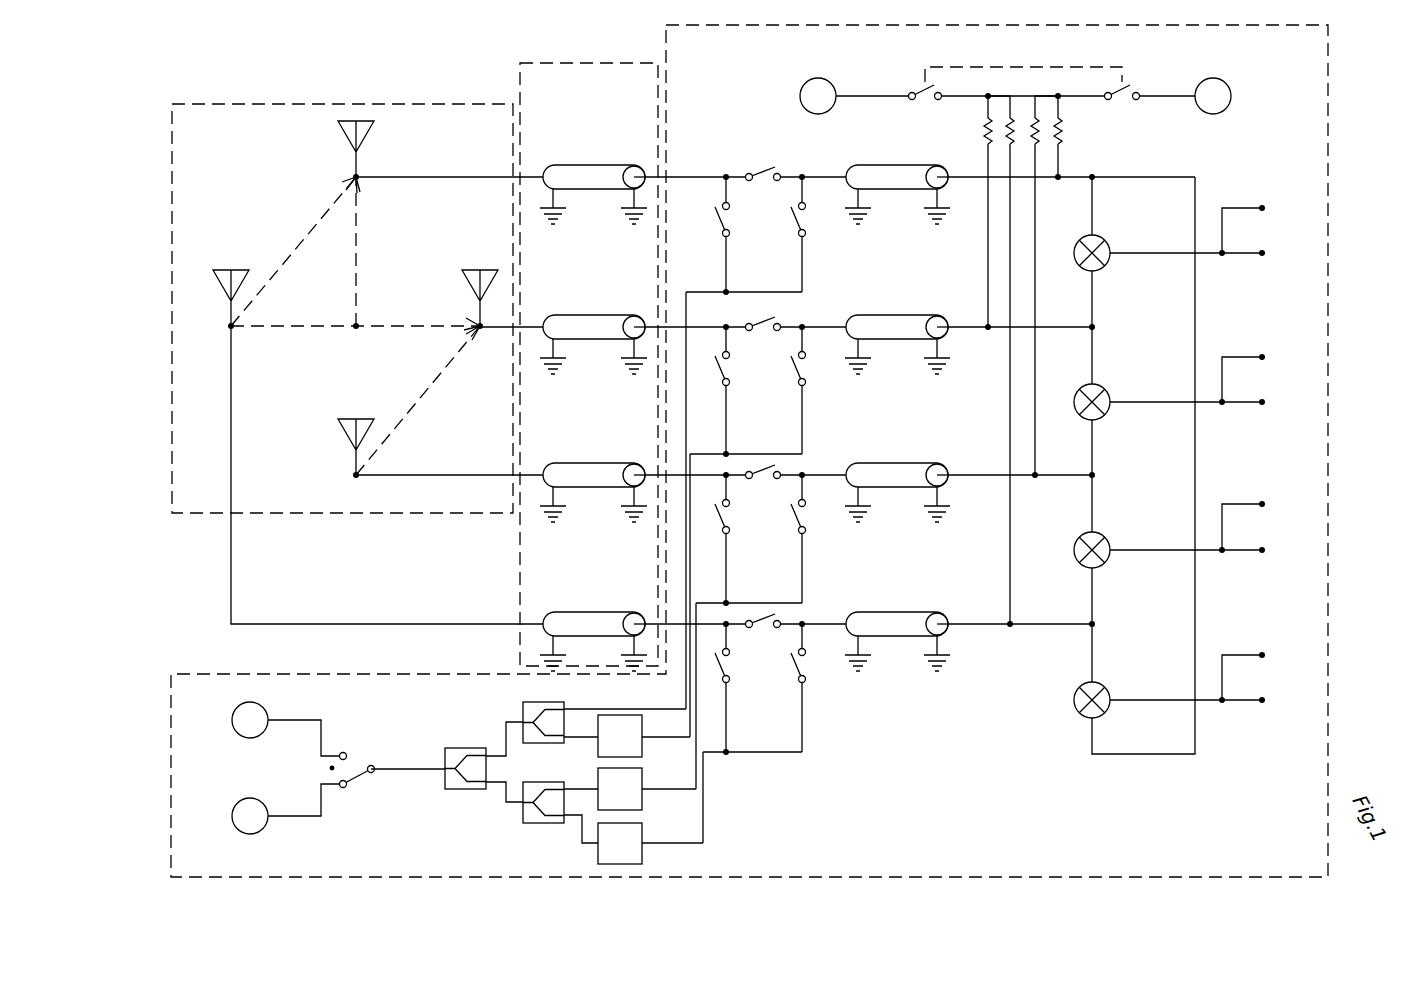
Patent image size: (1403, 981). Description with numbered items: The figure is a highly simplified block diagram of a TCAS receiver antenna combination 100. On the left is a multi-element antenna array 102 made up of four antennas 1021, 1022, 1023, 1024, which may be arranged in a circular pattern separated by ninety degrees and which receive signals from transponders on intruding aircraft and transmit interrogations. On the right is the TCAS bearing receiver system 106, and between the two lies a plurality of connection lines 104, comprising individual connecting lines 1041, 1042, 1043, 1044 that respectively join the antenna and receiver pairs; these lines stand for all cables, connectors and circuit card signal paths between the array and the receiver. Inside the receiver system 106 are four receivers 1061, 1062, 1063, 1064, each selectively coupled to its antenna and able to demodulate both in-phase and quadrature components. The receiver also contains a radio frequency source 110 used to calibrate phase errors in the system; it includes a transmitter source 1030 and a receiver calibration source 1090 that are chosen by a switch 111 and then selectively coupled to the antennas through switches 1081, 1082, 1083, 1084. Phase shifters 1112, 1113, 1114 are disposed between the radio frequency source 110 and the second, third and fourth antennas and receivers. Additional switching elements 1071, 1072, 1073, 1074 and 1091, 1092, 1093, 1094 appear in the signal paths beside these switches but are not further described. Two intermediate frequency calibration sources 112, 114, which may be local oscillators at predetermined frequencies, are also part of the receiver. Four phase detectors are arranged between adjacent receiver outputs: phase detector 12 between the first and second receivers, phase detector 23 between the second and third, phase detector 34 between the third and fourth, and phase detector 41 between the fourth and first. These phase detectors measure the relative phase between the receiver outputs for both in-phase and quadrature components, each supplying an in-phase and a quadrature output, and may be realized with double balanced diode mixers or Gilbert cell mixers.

The TCAS receiver antenna combination 100 is at (708, 442).
The multi-element antenna array 102 is at (342, 288).
The connection lines 104 is at (551, 354).
The TCAS bearing receiver system 106 is at (666, 25).
The radio frequency source 110 is at (393, 761).
The switch 111 is at (357, 760).
The intermediate frequency calibration source 112 is at (801, 95).
The intermediate frequency calibration source 114 is at (1231, 94).
The phase detector 12 is at (1083, 236).
The phase detector 23 is at (1084, 385).
The phase detector 34 is at (1084, 533).
The phase detector 41 is at (1084, 683).
The antenna 1021 is at (343, 138).
The antenna 1022 is at (466, 285).
The antenna 1023 is at (342, 440).
The antenna 1024 is at (242, 270).
The transmitter source 1030 is at (232, 720).
The receiver calibration source 1090 is at (232, 816).
The connecting line 1041 is at (634, 165).
The connecting line 1042 is at (634, 315).
The connecting line 1043 is at (634, 463).
The connecting line 1044 is at (634, 612).
The receiver 1061 is at (893, 190).
The receiver 1062 is at (893, 340).
The receiver 1063 is at (893, 488).
The receiver 1064 is at (901, 637).
The line switch 1 1071 is at (767, 169).
The line switch 2 1072 is at (777, 318).
The line switch 3 1073 is at (777, 466).
The line switch 4 1074 is at (777, 615).
The switch 1081 is at (716, 209).
The switch 1082 is at (716, 358).
The switch 1083 is at (716, 508).
The switch 1084 is at (716, 658).
The T/R cal switch 1 receive contact 1091 is at (794, 218).
The T/R cal switch 2 receive contact 1092 is at (797, 369).
The T/R cal switch 3 receive contact 1093 is at (797, 517).
The T/R cal switch 4 receive contact 1094 is at (798, 668).
The phase shifter 1112 is at (642, 748).
The phase shifter 1113 is at (642, 800).
The phase shifter 1114 is at (642, 823).